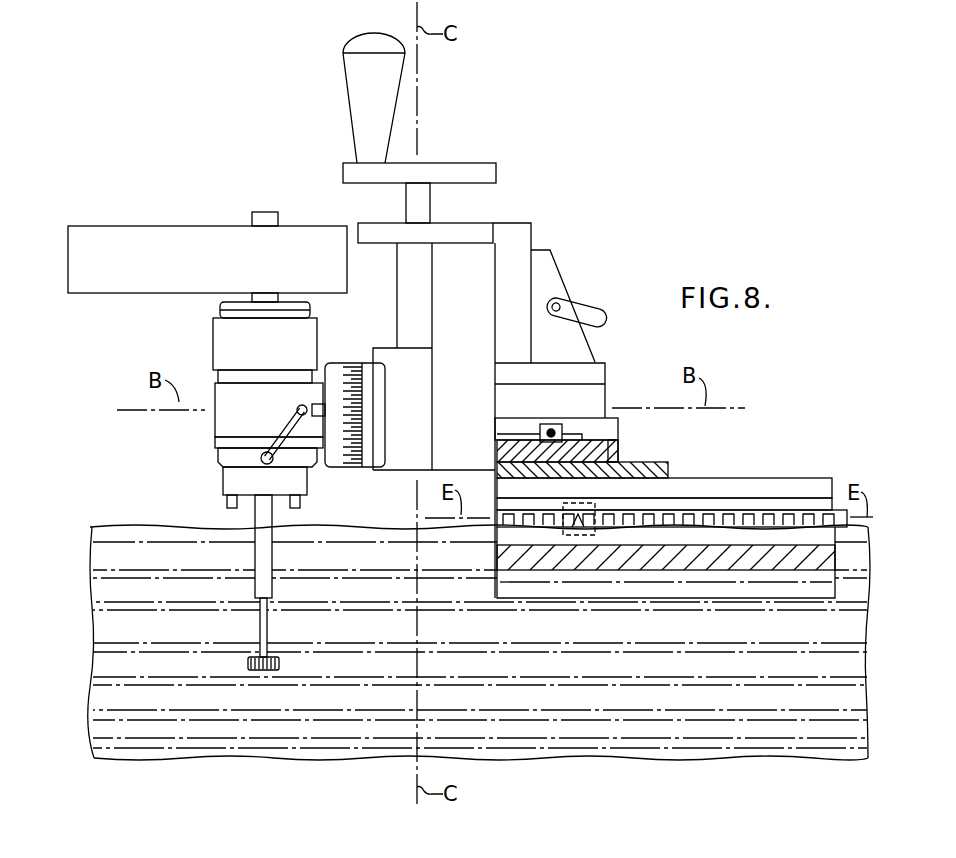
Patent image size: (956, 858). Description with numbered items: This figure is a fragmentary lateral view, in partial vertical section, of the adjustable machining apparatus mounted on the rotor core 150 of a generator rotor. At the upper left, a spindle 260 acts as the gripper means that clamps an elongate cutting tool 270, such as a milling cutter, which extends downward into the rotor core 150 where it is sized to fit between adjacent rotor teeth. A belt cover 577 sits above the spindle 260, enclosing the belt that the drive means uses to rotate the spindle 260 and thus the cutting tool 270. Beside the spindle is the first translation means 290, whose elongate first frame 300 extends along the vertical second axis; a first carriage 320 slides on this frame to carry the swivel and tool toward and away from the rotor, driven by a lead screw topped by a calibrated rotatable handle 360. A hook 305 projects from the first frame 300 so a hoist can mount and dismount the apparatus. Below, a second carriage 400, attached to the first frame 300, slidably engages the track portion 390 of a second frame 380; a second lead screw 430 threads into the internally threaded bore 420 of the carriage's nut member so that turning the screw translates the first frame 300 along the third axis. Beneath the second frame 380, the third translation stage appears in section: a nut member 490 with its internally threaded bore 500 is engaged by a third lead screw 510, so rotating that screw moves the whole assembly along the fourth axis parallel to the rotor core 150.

The rotor core 150 is at (119, 668).
The spindle 260 is at (213, 457).
The cutting tool 270 is at (260, 624).
The first translation means 290 is at (437, 149).
The first frame 300 is at (470, 262).
The hook 305 is at (591, 313).
The first carriage 320 is at (395, 360).
The calibrated rotatable handle 360 is at (360, 87).
The second frame 380 is at (497, 458).
The track portion 390 is at (617, 455).
The second carriage 400 is at (540, 428).
The internally threaded bore 420 is at (535, 434).
The second lead screw 430 is at (552, 427).
The nut member 490 is at (497, 548).
The internally threaded bore 500 is at (597, 533).
The third lead screw 510 is at (773, 513).
The belt cover 577 is at (173, 242).